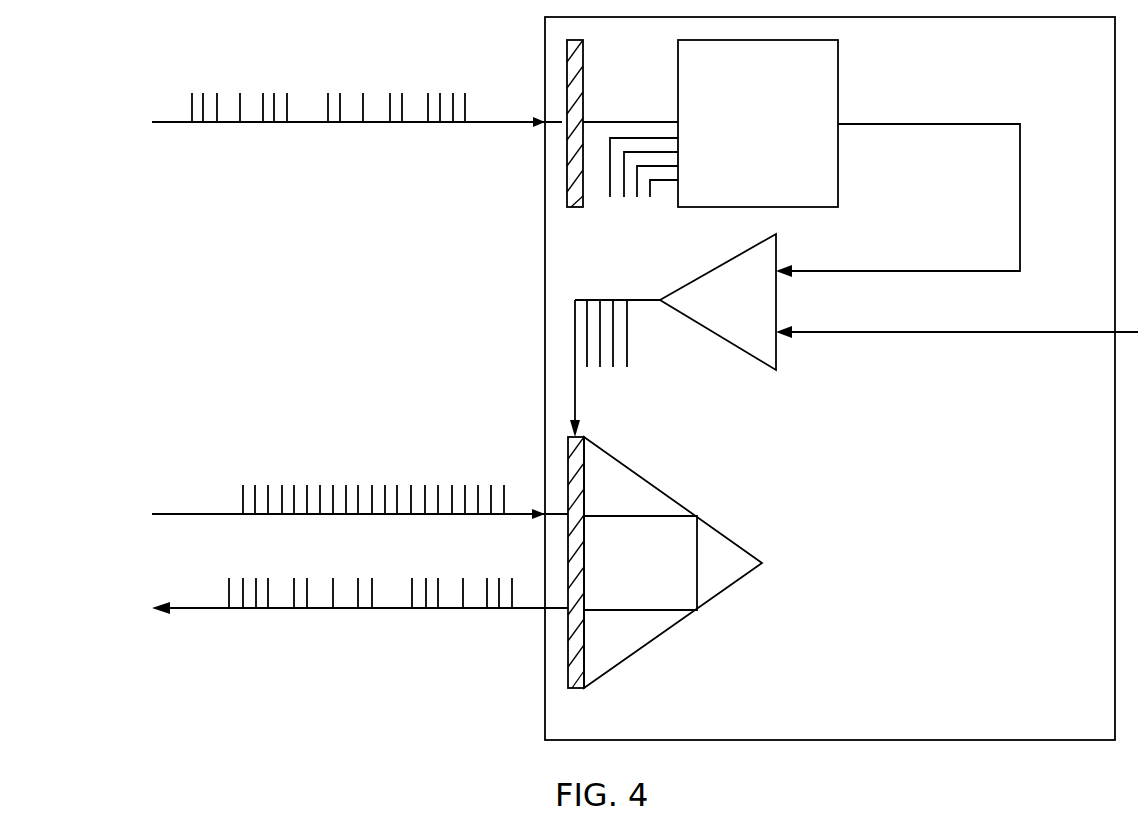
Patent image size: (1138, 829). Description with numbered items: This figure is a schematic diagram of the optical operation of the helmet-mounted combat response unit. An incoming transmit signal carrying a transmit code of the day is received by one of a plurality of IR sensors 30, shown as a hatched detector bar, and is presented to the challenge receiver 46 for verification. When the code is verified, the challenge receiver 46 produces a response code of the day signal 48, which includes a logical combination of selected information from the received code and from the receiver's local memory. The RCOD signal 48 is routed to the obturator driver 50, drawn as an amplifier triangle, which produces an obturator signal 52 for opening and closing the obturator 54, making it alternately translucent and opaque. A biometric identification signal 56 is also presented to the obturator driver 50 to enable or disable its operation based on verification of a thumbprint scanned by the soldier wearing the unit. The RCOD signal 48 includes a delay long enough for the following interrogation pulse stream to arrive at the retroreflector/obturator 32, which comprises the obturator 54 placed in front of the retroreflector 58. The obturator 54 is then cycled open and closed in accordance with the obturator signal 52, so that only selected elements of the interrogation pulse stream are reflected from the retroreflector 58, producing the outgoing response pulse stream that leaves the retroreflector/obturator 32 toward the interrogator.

The IR sensor 30 is at (585, 48).
The retroreflector/obturator 32 is at (692, 584).
The challenge receiver 46 is at (838, 72).
The response code of the day (RCOD) signal 48 is at (955, 124).
The obturator driver 50 is at (735, 350).
The obturator signal 52 is at (646, 300).
The obturator 54 is at (573, 690).
The biometric identification (ID) signal 56 is at (900, 333).
The retroreflector 58 is at (625, 657).